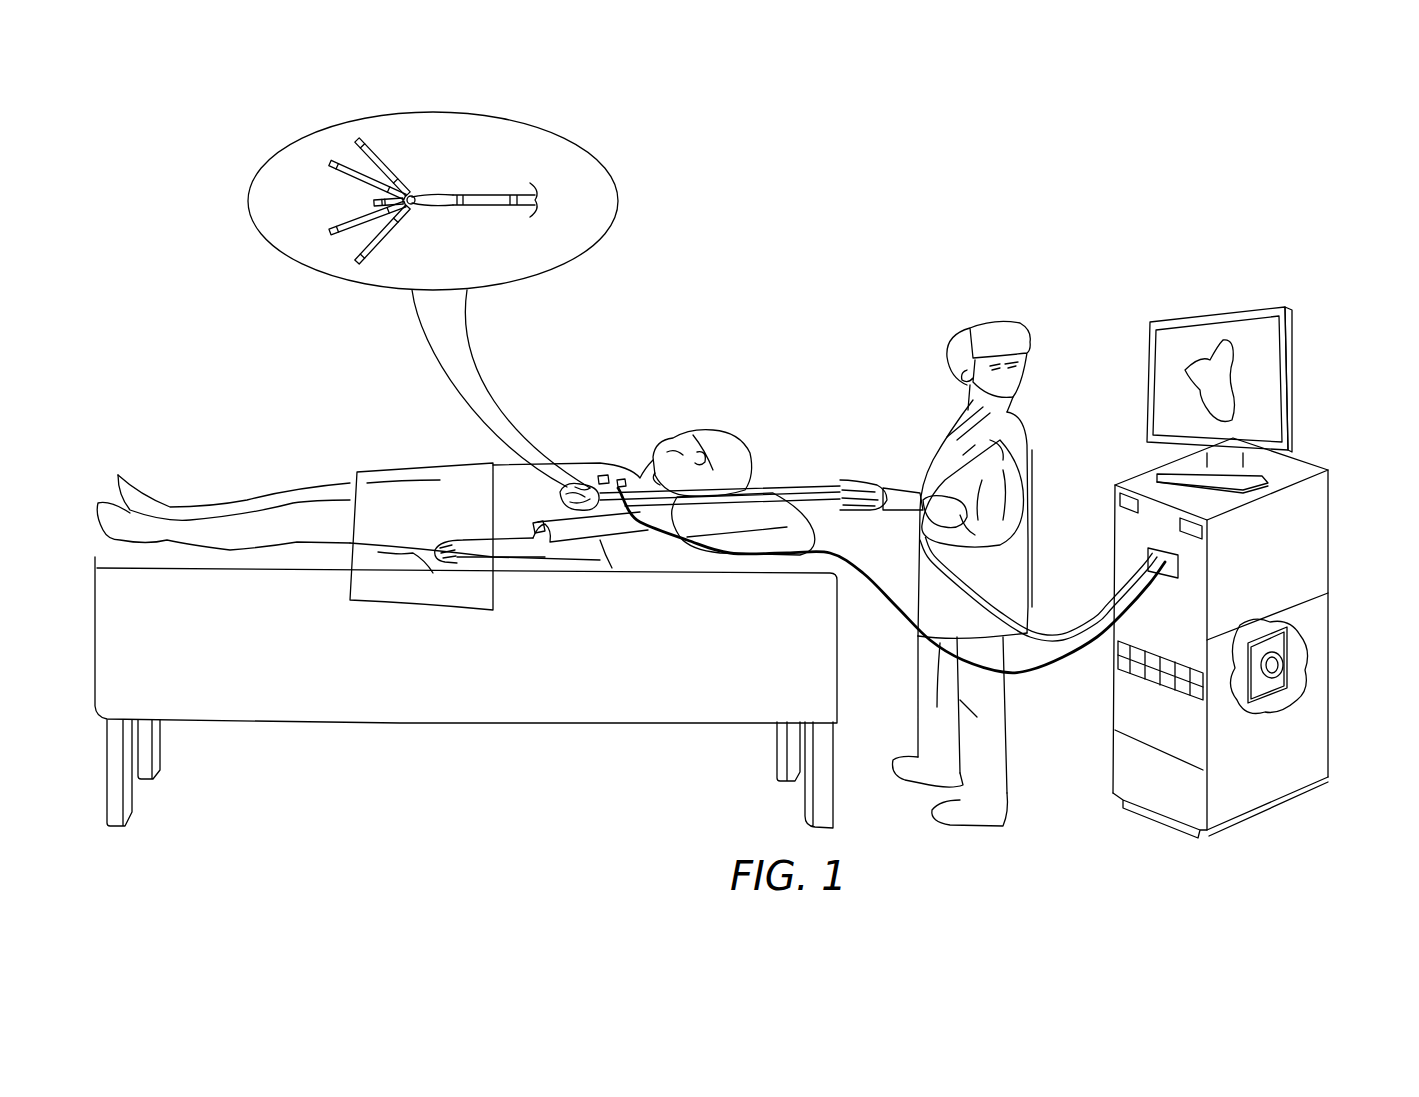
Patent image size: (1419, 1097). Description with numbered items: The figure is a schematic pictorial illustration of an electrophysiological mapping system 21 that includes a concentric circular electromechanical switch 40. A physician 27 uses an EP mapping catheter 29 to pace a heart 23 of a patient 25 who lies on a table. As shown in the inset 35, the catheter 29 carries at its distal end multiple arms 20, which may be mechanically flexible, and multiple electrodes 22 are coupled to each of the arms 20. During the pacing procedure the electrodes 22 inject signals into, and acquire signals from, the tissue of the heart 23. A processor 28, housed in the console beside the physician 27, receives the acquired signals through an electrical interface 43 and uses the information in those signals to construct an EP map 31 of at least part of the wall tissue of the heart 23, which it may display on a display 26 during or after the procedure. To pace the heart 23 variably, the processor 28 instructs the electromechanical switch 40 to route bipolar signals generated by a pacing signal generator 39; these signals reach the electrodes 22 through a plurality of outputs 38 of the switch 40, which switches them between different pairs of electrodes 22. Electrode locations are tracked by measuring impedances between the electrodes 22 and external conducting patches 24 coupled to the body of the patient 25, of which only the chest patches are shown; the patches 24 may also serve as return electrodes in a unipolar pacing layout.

The arms 20 is at (388, 158).
The EP mapping system 21 is at (188, 370).
The electrodes 22 is at (337, 222).
The heart 23 is at (560, 490).
The external conducting patches 24 is at (603, 475).
The patient 25 is at (712, 437).
The display 26 is at (1243, 303).
The physician 27 is at (945, 358).
The processor 28 is at (1313, 517).
The EP mapping catheter 29 is at (470, 229).
The EP map 31 is at (1185, 370).
The inset 35 is at (612, 174).
The outputs 38 is at (1117, 668).
The pacing signal generator 39 is at (1130, 711).
The concentric circular electromechanical switch 40 is at (1275, 665).
The electrical interface 43 is at (1143, 552).